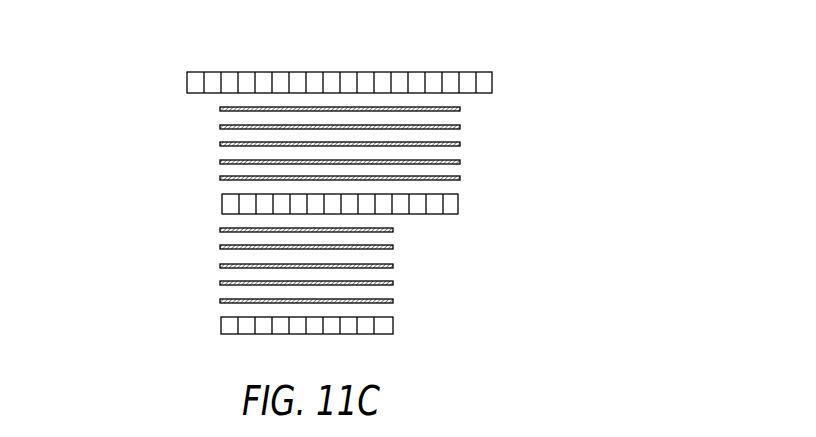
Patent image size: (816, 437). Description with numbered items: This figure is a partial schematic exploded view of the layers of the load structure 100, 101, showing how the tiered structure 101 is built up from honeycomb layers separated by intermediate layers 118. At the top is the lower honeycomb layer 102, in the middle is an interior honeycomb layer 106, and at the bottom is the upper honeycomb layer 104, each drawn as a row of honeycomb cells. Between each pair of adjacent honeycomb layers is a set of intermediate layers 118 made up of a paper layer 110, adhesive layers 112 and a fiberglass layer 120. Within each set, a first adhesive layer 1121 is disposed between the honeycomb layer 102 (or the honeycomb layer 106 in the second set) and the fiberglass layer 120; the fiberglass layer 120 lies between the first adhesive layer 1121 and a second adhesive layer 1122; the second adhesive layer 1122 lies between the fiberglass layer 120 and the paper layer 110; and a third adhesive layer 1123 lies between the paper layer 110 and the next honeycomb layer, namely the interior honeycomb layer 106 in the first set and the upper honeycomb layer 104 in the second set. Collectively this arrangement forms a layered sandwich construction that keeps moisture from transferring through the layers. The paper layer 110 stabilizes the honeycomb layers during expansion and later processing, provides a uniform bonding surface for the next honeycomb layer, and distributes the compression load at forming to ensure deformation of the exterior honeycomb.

The energy storage device 100 is at (263, 42).
The tiered structure 101 is at (325, 207).
The lower honeycomb layer 102 is at (492, 83).
The upper honeycomb layer 104 is at (393, 325).
The interior honeycomb layer 106 is at (458, 205).
The paper layer 110 is at (220, 162).
The adhesive layers 112 is at (395, 211).
The first adhesive layer 1121 is at (460, 109).
The second adhesive layer 1122 is at (460, 144).
The third adhesive layer 1123 is at (460, 178).
The intermediate layers 118 is at (183, 143).
The fiberglass layer 120 is at (220, 127).